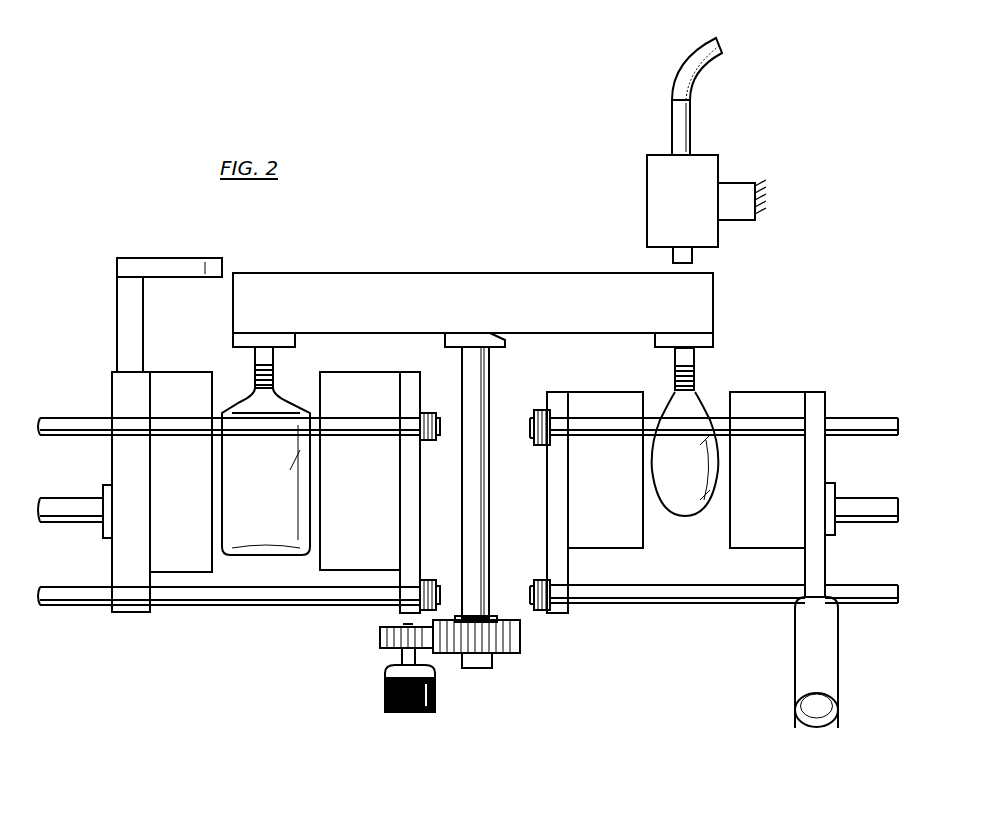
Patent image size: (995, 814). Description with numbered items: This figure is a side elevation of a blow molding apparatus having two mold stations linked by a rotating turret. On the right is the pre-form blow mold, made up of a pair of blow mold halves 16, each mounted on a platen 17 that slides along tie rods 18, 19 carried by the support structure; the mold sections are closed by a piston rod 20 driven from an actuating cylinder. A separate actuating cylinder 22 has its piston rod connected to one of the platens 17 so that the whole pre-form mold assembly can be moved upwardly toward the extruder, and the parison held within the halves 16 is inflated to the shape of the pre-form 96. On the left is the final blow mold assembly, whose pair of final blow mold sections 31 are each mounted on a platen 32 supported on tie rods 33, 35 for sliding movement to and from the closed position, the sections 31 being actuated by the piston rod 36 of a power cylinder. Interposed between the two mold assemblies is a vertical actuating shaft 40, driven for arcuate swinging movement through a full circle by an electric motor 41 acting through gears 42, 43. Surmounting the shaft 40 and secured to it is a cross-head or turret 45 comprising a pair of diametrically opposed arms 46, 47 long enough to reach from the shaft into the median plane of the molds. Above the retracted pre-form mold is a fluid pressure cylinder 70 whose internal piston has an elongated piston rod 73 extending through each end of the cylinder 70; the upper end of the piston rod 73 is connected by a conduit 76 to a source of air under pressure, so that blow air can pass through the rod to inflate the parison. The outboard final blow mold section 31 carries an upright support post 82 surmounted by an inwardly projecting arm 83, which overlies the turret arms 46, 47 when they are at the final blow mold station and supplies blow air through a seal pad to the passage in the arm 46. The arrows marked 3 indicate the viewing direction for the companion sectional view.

The section line of FIG. 3 is at (679, 15).
The blow mold halves 16 is at (620, 524).
The platen 17 is at (560, 467).
The tie rod 18 is at (868, 597).
The tie rod 19 is at (862, 424).
The piston rod 20 is at (860, 514).
The actuating cylinder 22 is at (838, 673).
The final blow mold sections 31 is at (193, 520).
The platen 32 is at (140, 467).
The tie rod 33 is at (78, 603).
The upper shaft 35 is at (62, 424).
The piston rod 36 is at (50, 517).
The vertical actuating shaft 40 is at (485, 516).
The electric motor 41 is at (385, 697).
The gear 42 is at (380, 643).
The gear 43 is at (520, 643).
The cross-head or turret 45 is at (473, 271).
The arm 46 is at (606, 290).
The arm 47 is at (310, 290).
The fluid pressure cylinder 70 is at (648, 145).
The piston rod 73 is at (685, 123).
The conduit 76 is at (700, 62).
The upright support post 82 is at (117, 320).
The inwardly projecting arm 83 is at (155, 262).
The pre-form 96 is at (694, 474).